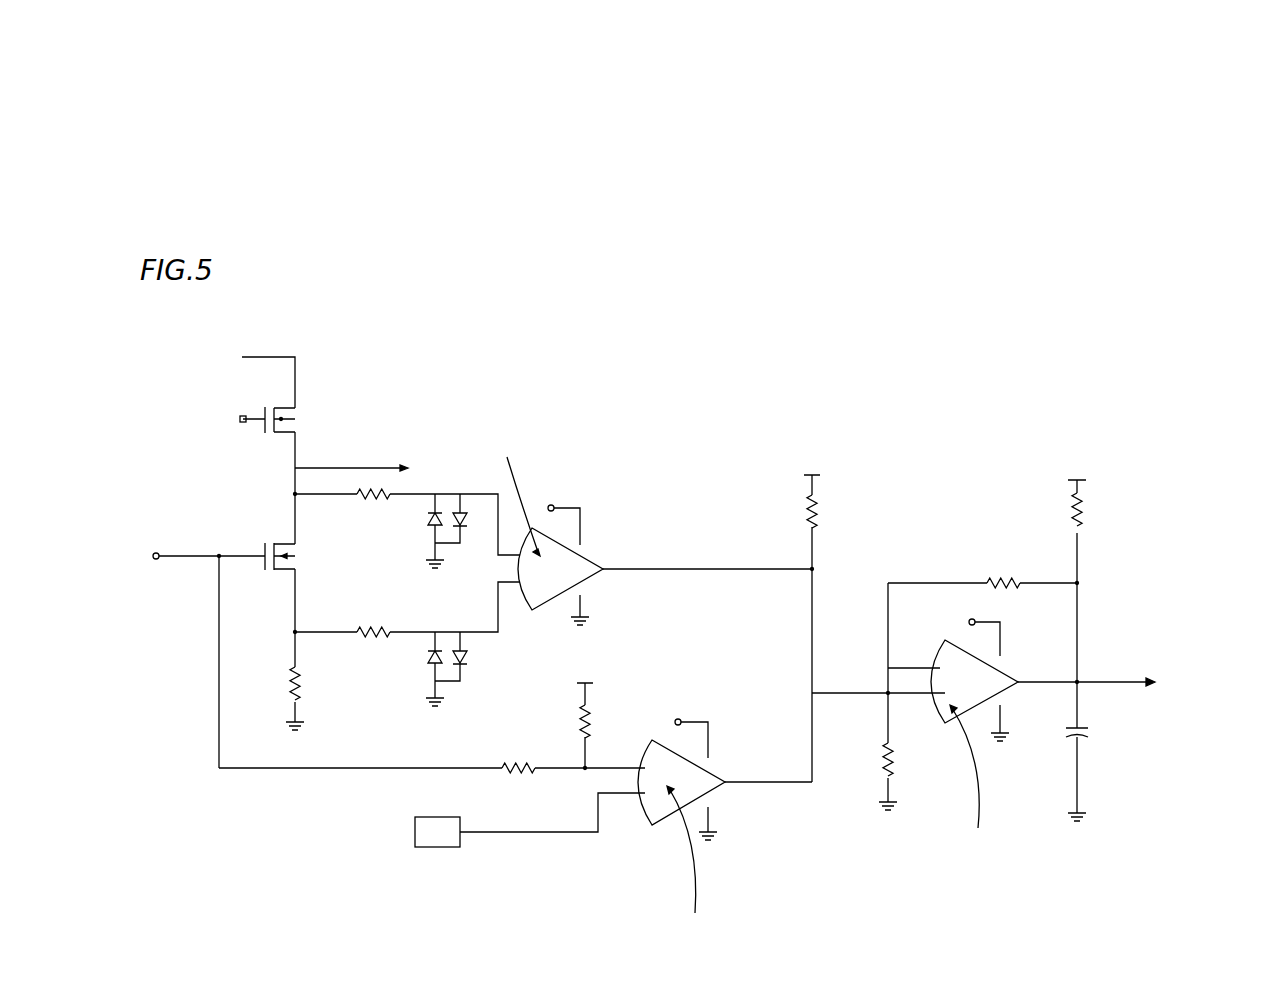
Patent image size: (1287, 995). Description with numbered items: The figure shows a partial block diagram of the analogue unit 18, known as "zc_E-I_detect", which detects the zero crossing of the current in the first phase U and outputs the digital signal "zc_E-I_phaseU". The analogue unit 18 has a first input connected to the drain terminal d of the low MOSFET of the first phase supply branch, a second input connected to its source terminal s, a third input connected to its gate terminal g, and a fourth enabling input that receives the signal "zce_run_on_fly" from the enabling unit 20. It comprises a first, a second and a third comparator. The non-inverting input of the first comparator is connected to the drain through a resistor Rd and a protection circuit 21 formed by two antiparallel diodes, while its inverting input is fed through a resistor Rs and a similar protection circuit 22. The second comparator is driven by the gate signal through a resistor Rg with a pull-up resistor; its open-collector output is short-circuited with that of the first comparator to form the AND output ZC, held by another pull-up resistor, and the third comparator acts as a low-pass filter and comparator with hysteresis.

The analogue unit 18 is at (694, 422).
The enabling unit 20 is at (437, 832).
The protection circuit 21 is at (452, 552).
The protection circuit 22 is at (426, 671).